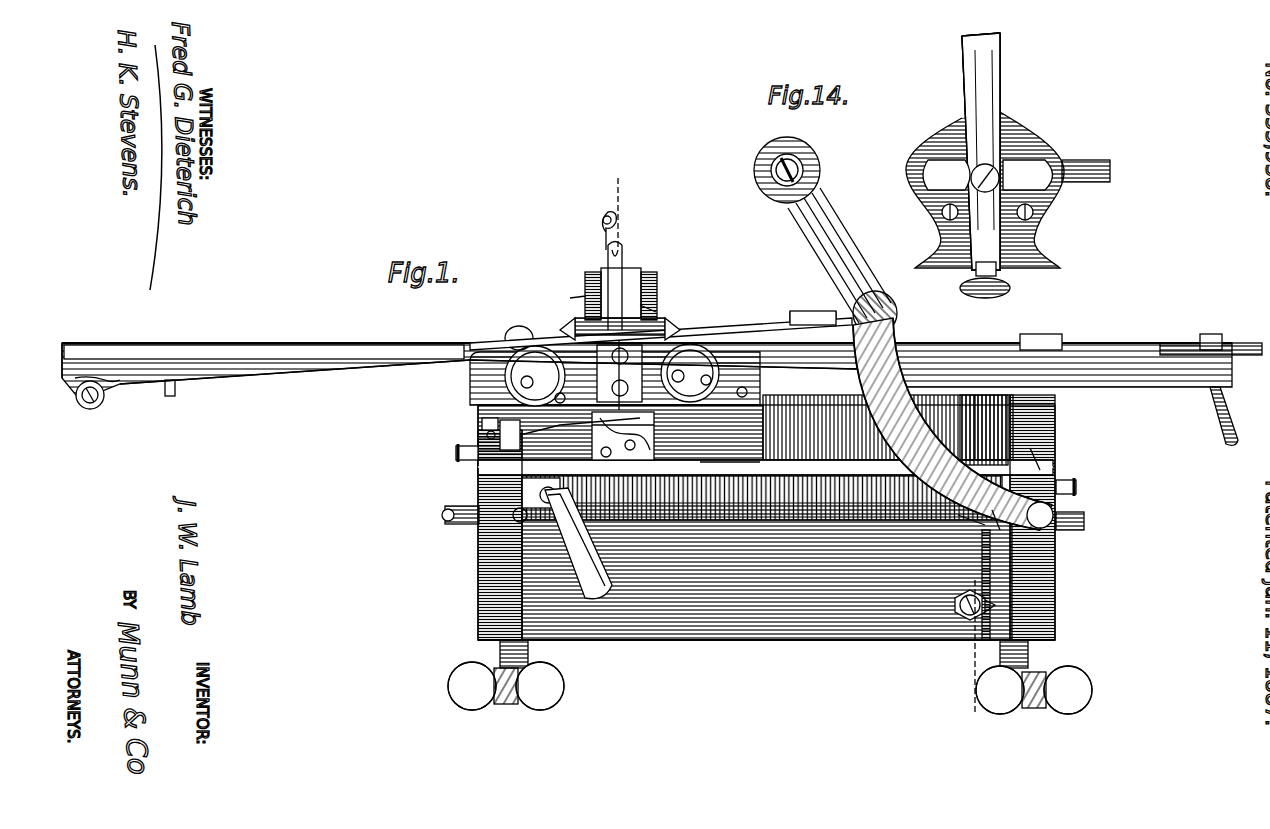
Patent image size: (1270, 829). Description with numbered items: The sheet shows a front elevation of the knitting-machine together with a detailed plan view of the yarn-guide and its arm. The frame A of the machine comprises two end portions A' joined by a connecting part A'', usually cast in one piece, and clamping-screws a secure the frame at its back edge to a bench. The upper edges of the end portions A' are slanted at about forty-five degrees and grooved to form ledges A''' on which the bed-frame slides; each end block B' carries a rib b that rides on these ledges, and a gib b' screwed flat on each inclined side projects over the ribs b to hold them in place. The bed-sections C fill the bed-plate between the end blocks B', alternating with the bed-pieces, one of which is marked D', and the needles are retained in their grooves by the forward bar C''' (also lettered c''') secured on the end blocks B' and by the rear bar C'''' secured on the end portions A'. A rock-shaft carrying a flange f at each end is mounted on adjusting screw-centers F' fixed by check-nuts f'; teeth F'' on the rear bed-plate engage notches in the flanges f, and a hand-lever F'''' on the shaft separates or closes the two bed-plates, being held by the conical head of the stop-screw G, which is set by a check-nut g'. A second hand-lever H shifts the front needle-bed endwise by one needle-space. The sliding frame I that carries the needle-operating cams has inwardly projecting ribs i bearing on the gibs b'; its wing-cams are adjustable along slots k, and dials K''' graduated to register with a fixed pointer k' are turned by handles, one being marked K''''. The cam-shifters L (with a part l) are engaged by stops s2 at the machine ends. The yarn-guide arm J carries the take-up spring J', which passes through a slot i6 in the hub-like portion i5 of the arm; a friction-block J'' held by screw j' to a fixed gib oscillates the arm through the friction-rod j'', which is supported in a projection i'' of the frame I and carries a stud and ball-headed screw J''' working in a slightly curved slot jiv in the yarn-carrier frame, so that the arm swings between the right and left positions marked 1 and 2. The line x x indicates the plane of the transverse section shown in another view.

In FIG. 1, the sliding frame I is at (647, 367).
In FIG. 1, the frame A is at (766, 652).
In FIG. 1, the end portions A' is at (1043, 517).
In FIG. 1, the connecting part A'' is at (653, 545).
In FIG. 1, the ledges A''' is at (1037, 459).
In FIG. 1, the end blocks B' is at (730, 443).
In FIG. 1, the bed-sections C is at (765, 466).
In FIG. 1, the forward bar C''' is at (983, 388).
In FIG. 1, the rear bar C'''' is at (730, 466).
In FIG. 1, the roller c''' is at (507, 514).
In FIG. 1, the needles D' is at (762, 529).
In FIG. 1, the adjusting screw-centers F' is at (764, 515).
In FIG. 1, the teeth F'' is at (953, 425).
In FIG. 1, the hand-lever F'''' is at (970, 602).
In FIG. 1, the flange f is at (971, 519).
In FIG. 1, the check-nuts f' is at (759, 531).
In FIG. 1, the stop-screw G is at (965, 615).
In FIG. 1, the check-nut g' is at (951, 632).
In FIG. 1, the hand-lever H is at (578, 543).
In FIG. 1, the longitudinal ribs i is at (471, 429).
In FIG. 1, the projection i'' is at (1219, 378).
In FIG. 1, the hub-like portion i5 is at (632, 291).
In FIG. 1, the slot i6 is at (584, 282).
In FIG. 1, the yarn-guide arm J is at (652, 303).
In FIG. 14, the yarn-guide arm J is at (981, 151).
In FIG. 1, the take-up spring J' is at (623, 271).
In FIG. 1, the friction-block J'' is at (1057, 333).
In FIG. 14, the screw J''' is at (988, 165).
In FIG. 1, the screw j' is at (991, 520).
In FIG. 1, the friction-rod j'' is at (1026, 333).
In FIG. 14, the friction-rod j'' is at (1086, 163).
In FIG. 14, the screws jiv is at (983, 197).
In FIG. 1, the slots k is at (620, 328).
In FIG. 1, the fixed pointer k' is at (661, 329).
In FIG. 1, the dials K''' is at (615, 376).
In FIG. 1, the cam disk K'''' is at (690, 373).
In FIG. 1, the cam-shifters L is at (623, 436).
In FIG. 1, the latch pin l is at (623, 434).
In FIG. 1, the rib b is at (513, 445).
In FIG. 1, the gib b' is at (474, 416).
In FIG. 1, the stops s2 is at (1080, 466).
In FIG. 1, the clamping-screws a is at (545, 682).
In FIG. 1, the section line x is at (798, 447).
In FIG. 14, the right position 1 is at (939, 175).
In FIG. 14, the left position 2 is at (1031, 175).